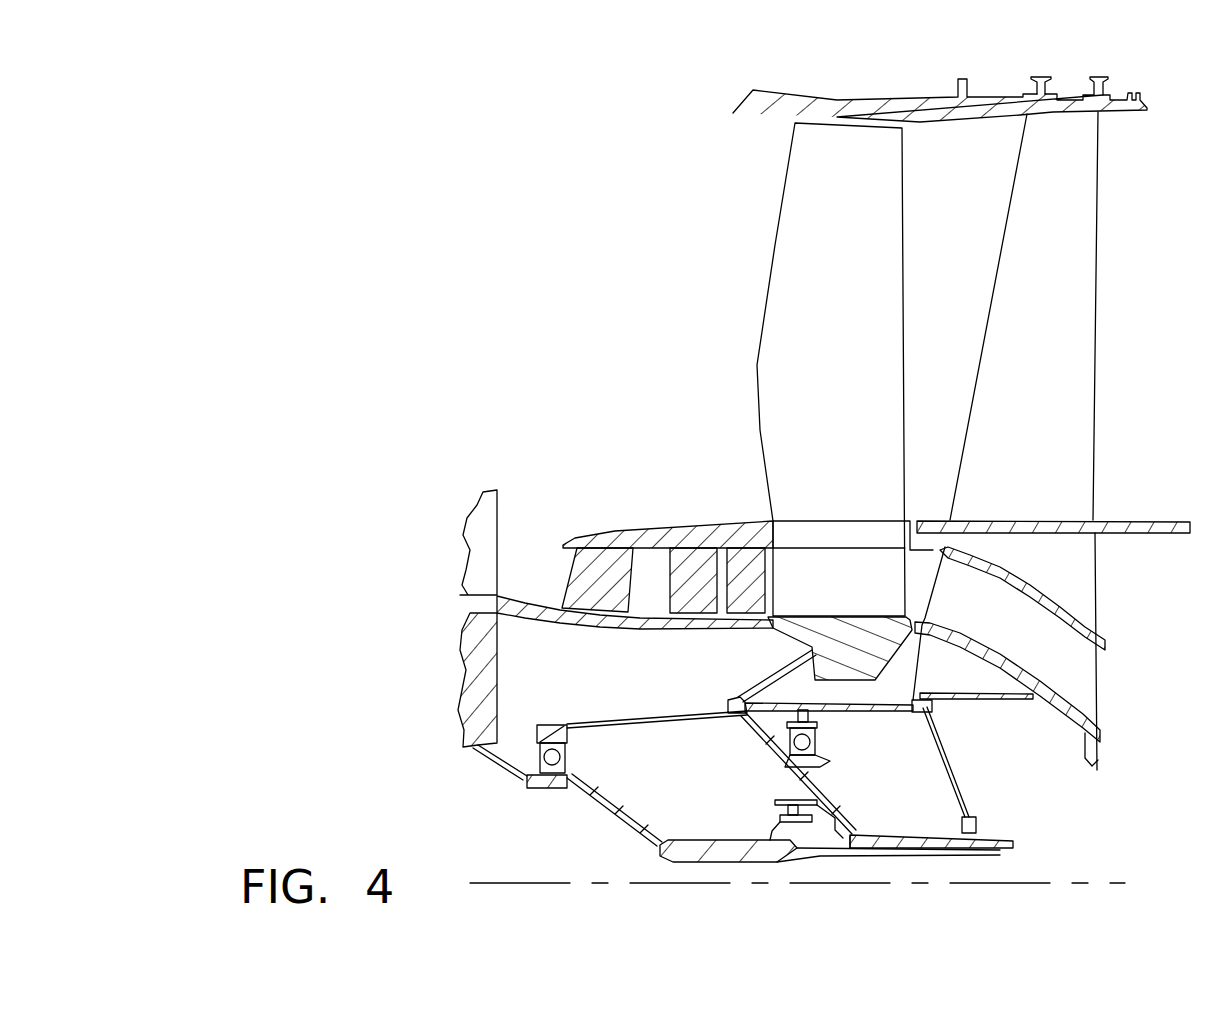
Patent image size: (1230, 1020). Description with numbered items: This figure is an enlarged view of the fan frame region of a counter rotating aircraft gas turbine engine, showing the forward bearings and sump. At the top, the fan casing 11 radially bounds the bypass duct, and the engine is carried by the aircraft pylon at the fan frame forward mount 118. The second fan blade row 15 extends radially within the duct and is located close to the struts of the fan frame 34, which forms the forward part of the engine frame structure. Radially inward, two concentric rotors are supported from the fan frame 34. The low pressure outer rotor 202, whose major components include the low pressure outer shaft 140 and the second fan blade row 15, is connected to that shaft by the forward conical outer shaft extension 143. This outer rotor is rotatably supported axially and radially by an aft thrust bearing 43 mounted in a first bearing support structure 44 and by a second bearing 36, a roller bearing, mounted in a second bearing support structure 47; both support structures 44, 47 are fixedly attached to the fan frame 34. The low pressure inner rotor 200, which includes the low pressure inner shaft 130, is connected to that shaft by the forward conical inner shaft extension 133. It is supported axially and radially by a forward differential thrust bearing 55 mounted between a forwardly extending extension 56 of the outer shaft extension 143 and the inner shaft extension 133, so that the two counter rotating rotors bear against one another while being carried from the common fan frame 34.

The fan casing 11 is at (893, 97).
The fan frame forward mount 118 is at (1058, 90).
The second fan blade row 15 is at (766, 302).
The fan frame 34 is at (1097, 584).
The forwardly extending extension 56 is at (650, 718).
The forward differential thrust bearing 55 is at (562, 757).
The forward conical outer shaft extension 143 is at (762, 742).
The aft thrust bearing 43 is at (815, 742).
The first bearing support structure 44 is at (877, 712).
The second bearing support structure 47 is at (947, 763).
The second bearing 36 is at (975, 828).
The low pressure outer rotor 202 is at (883, 833).
The low pressure outer shaft 140 is at (1003, 841).
The low pressure inner shaft 130 is at (983, 855).
The forward conical inner shaft extension 133 is at (615, 820).
The low pressure inner rotor 200 is at (720, 866).